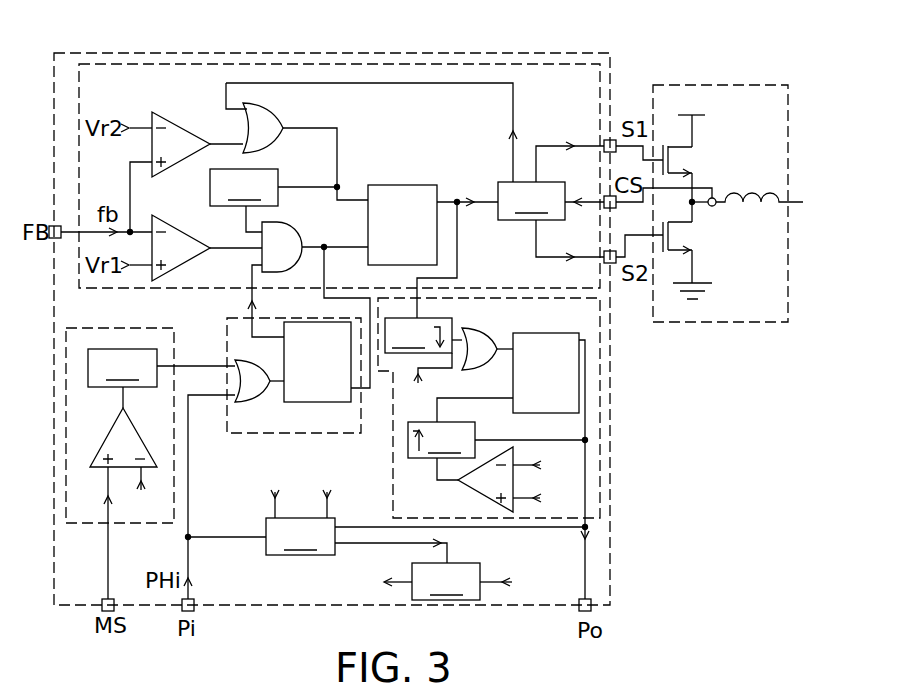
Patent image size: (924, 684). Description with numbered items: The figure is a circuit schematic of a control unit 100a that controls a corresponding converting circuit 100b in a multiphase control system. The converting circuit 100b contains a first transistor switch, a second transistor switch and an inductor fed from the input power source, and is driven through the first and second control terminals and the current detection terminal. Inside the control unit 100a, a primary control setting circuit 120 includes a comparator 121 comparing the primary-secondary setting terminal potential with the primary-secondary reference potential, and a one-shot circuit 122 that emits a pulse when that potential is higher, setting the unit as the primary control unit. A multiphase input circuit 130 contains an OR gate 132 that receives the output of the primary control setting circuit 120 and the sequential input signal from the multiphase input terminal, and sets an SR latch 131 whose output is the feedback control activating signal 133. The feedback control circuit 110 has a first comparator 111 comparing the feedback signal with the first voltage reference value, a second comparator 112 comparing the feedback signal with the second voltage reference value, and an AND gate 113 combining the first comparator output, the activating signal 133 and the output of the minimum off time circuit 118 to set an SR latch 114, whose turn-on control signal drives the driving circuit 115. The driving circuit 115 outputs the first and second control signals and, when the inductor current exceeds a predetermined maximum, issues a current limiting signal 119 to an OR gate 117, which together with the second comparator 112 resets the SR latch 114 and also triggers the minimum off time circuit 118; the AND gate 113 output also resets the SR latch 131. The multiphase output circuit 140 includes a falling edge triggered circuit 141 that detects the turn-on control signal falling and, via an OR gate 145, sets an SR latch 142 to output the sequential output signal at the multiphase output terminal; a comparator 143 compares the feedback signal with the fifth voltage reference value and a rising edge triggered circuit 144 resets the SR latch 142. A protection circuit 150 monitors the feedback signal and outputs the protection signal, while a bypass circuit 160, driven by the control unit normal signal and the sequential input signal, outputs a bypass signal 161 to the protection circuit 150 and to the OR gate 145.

The control unit 100a is at (62, 53).
The converting circuit 100b is at (745, 85).
The feedback control circuit 110 is at (88, 288).
The first comparator 111 is at (168, 229).
The second comparator 112 is at (171, 118).
The AND gate 113 is at (292, 231).
The SR latch 114 is at (405, 185).
The driving circuit 115 is at (551, 203).
The OR gate 117 is at (275, 121).
The minimum off time circuit 118 is at (275, 200).
The current limiting signal 119 is at (371, 132).
The primary control setting circuit 120 is at (143, 328).
The comparator 121 is at (136, 442).
The one-shot circuit 122 is at (161, 378).
The multiphase input circuit 130 is at (230, 355).
The SR latch 131 is at (297, 402).
The OR gate 132 is at (253, 394).
The feedback control activating signal 133 is at (245, 301).
The multiphase output circuit 140 is at (393, 415).
The falling edge triggered circuit 141 is at (423, 335).
The SR latch 142 is at (549, 339).
The comparator 143 is at (477, 488).
The rising edge triggered circuit 144 is at (496, 428).
The OR gate 145 is at (477, 337).
The protection circuit 150 is at (432, 581).
The bypass circuit 160 is at (421, 510).
The bypass signal 161 is at (415, 458).